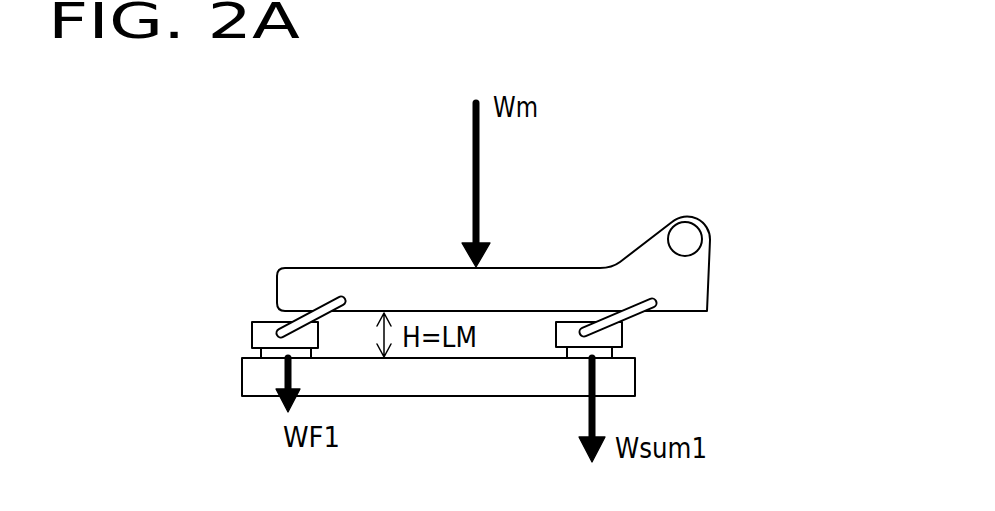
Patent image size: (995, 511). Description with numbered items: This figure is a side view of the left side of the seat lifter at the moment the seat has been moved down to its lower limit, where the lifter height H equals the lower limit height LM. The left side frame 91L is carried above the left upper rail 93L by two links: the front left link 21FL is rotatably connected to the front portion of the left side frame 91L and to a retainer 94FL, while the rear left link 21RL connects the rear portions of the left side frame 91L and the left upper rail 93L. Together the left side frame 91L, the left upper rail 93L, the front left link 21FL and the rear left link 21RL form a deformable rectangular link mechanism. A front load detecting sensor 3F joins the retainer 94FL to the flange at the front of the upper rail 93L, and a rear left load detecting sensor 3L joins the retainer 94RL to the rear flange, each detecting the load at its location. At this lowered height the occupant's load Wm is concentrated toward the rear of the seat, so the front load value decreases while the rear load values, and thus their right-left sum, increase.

The left side frame 91L is at (652, 265).
The front left link 21FL is at (285, 322).
The rear left link 21RL is at (630, 317).
The retainer 94FL is at (263, 330).
The retainer 94RL is at (624, 335).
The front load detecting sensor 3F is at (262, 353).
The rear left load detecting sensor 3L is at (618, 351).
The left upper rail 93L is at (508, 385).